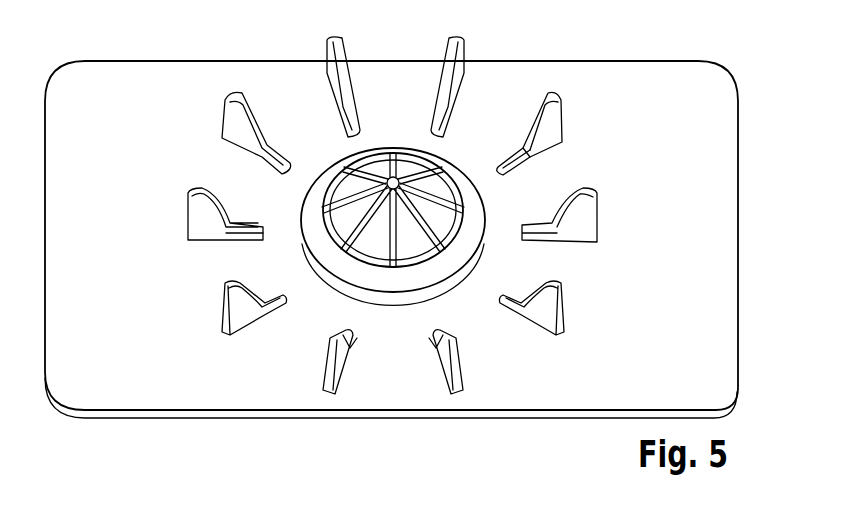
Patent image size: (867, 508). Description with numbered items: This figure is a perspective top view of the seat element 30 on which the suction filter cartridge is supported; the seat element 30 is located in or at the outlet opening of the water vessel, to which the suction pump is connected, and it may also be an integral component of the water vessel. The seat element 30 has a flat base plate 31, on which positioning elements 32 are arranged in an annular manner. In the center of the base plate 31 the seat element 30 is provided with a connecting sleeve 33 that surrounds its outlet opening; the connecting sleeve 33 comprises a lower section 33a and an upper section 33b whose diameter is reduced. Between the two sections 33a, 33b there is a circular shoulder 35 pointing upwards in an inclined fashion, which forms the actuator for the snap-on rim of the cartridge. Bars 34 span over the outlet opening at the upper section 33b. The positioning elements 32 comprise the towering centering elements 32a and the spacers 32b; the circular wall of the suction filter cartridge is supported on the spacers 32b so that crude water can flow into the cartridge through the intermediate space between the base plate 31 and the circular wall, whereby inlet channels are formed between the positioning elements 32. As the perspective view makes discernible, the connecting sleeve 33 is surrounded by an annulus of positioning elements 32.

The seat element 30 is at (704, 51).
The base plate 31 is at (130, 85).
The positioning elements 32 is at (572, 132).
The centering elements 32a is at (558, 110).
The spacers 32b is at (513, 157).
The connecting sleeve 33 is at (494, 237).
The lower section 33a is at (390, 298).
The upper section with reduced diameter 33b is at (362, 258).
The bars 34 is at (420, 147).
The circular shoulder 35 is at (443, 263).